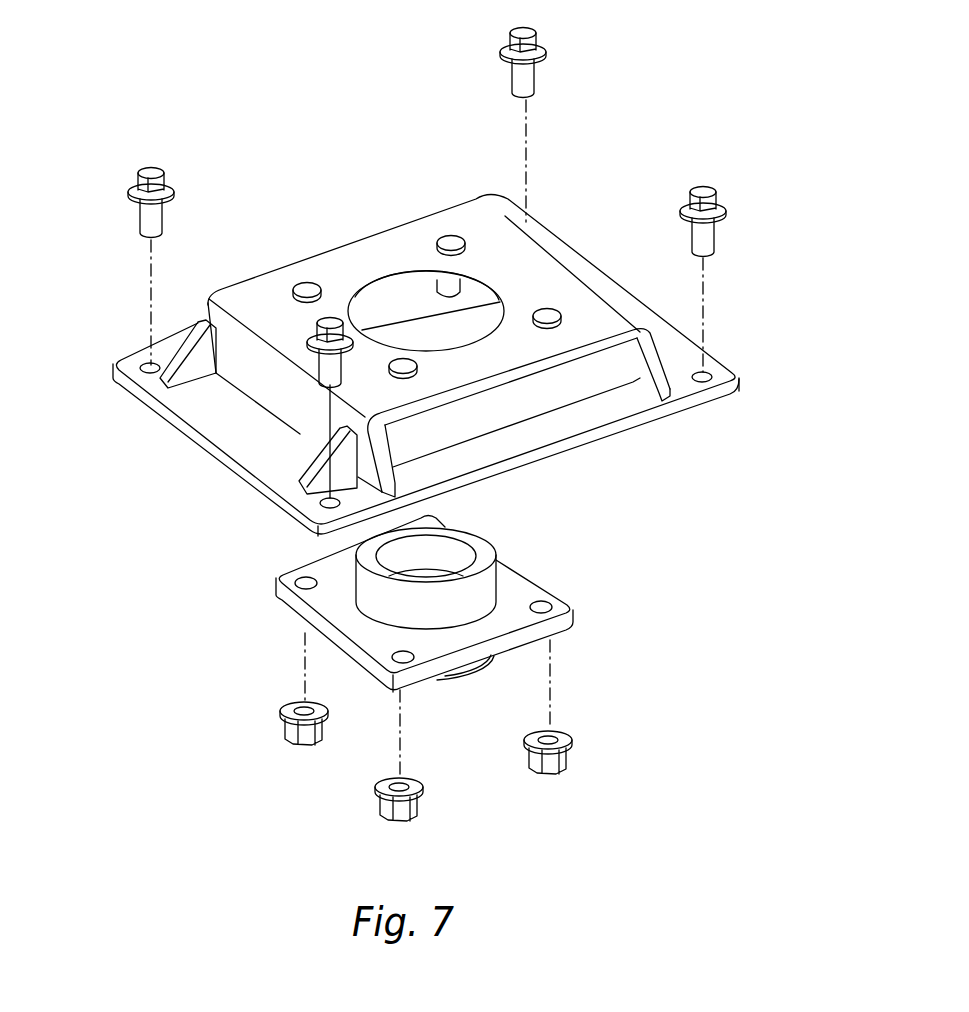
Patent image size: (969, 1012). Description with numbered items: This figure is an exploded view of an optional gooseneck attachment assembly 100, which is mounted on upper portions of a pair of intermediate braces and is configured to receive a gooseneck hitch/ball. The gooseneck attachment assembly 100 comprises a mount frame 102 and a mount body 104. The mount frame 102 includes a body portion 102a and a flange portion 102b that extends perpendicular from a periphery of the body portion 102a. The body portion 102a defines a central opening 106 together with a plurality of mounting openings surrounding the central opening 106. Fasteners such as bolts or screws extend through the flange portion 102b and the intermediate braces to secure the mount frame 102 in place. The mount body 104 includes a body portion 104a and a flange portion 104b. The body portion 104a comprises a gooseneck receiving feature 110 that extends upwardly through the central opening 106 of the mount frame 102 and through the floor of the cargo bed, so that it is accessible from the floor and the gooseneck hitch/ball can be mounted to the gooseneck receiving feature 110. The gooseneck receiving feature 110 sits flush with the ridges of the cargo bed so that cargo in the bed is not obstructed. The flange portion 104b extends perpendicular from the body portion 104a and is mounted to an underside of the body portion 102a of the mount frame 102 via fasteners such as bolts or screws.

The gooseneck attachment assembly 100 is at (386, 80).
The mount frame 102 is at (388, 230).
The body portion 102a is at (533, 266).
The flange portion 102b is at (598, 432).
The central opening 106 is at (409, 298).
The mount body 104 is at (272, 600).
The body portion 104a is at (368, 595).
The flange portion 104b is at (523, 597).
The gooseneck receiving feature 110 is at (496, 578).